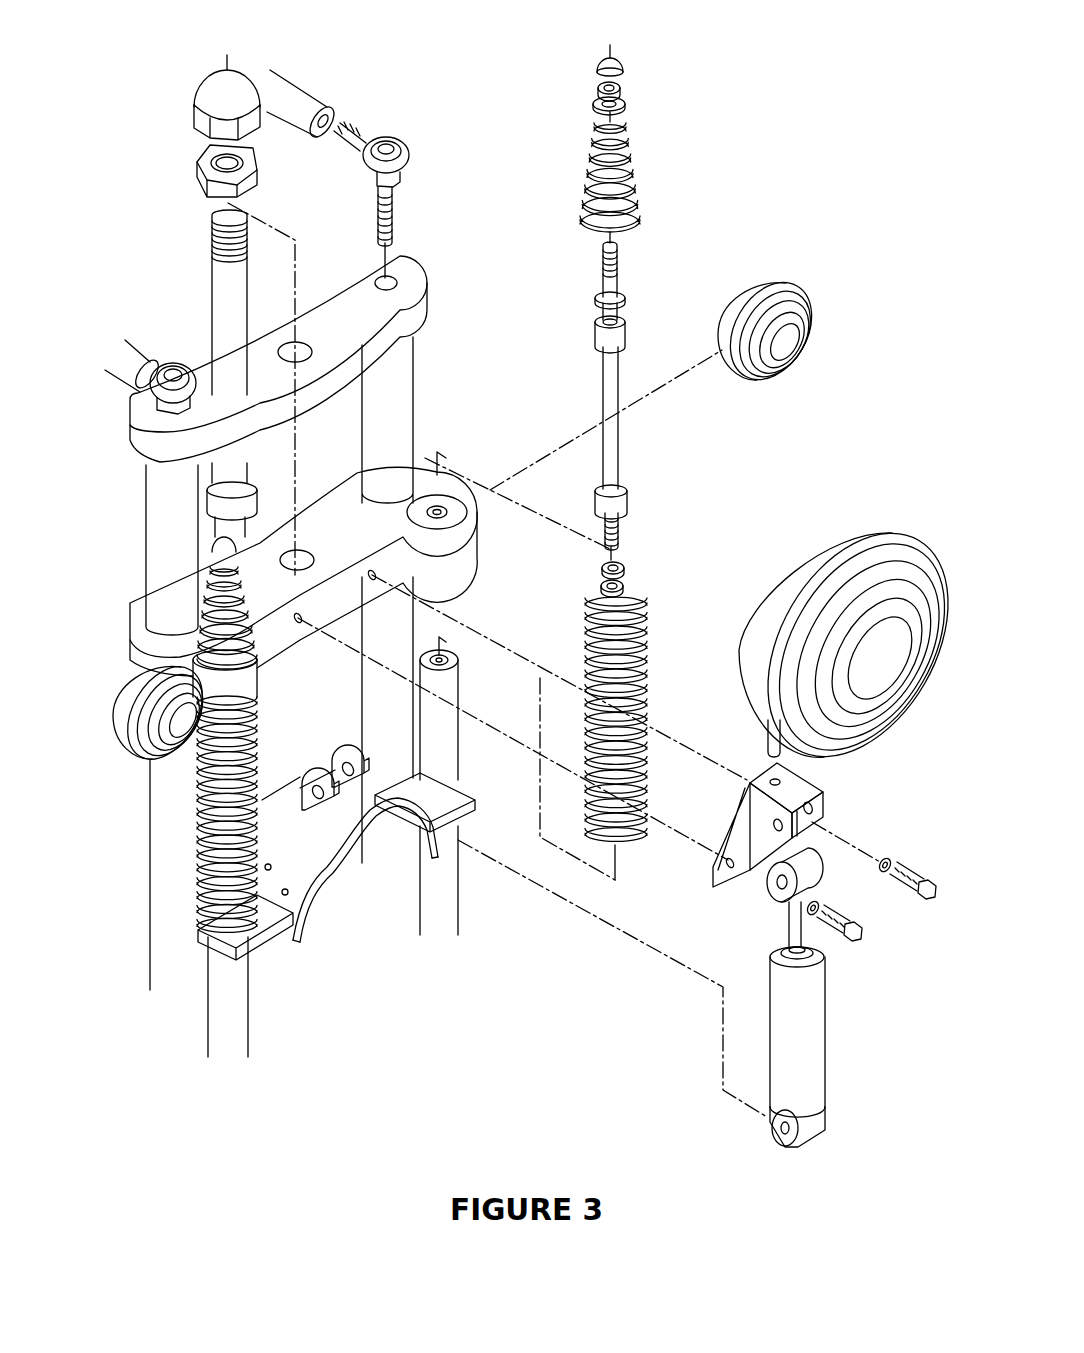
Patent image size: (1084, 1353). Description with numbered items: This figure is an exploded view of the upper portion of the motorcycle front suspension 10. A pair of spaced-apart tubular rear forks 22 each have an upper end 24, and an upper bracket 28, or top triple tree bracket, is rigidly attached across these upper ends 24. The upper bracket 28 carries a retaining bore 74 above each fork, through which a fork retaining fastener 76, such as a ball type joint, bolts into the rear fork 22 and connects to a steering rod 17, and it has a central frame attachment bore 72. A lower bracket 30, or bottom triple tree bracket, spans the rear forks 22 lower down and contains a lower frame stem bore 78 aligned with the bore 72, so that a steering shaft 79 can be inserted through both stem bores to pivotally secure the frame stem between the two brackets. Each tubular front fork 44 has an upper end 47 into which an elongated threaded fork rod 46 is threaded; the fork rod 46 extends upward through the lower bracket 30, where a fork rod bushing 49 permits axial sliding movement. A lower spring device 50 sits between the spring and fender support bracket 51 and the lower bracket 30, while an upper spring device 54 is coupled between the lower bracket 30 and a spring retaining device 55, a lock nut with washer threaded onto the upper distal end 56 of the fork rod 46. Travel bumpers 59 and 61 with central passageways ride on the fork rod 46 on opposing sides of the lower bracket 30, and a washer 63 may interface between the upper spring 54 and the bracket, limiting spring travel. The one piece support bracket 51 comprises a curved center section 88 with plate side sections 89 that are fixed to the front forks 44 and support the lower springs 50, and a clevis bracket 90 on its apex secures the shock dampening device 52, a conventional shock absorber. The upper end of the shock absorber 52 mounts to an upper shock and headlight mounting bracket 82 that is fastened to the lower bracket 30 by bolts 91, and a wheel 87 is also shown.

The motorcycle front suspension 10 is at (833, 177).
The steering rod 17 is at (297, 78).
The rear fork 22 is at (395, 412).
The upper end 24 is at (415, 345).
The upper bracket 28 is at (428, 298).
The lower bracket 30 is at (478, 545).
The front fork 44 is at (460, 750).
The fork rod 46 is at (623, 420).
The upper end 47 is at (445, 655).
The fork rod bushing 49 is at (440, 505).
The lower spring device 50 is at (650, 700).
The spring and fender support bracket 51 is at (320, 860).
The shock dampening device 52 is at (830, 1055).
The upper spring device 54 is at (638, 170).
The spring retaining device 55 is at (622, 58).
The upper distal end 56 is at (622, 250).
The travel bumper 59 is at (630, 335).
The travel bumper 61 is at (630, 497).
The washer 63 is at (630, 298).
The frame attachment bore 72 is at (297, 340).
The retaining bore 74 is at (388, 277).
The fork retaining fastener 76 is at (400, 137).
The lower frame stem bore 78 is at (303, 548).
The steering shaft 79 is at (210, 277).
The upper shock and headlight mounting bracket 82 is at (830, 805).
The wheel 87 is at (895, 720).
The curved center section 88 is at (295, 880).
The side section 89 is at (462, 810).
The clevis bracket 90 is at (307, 768).
The bolt 91 is at (913, 895).